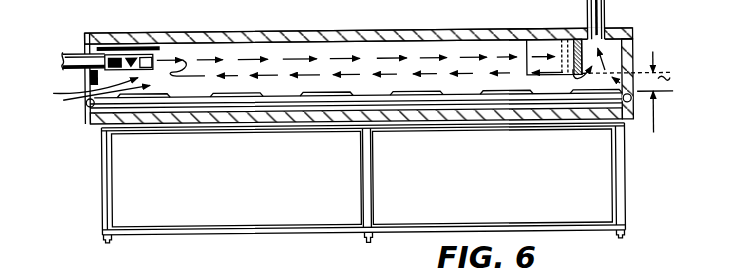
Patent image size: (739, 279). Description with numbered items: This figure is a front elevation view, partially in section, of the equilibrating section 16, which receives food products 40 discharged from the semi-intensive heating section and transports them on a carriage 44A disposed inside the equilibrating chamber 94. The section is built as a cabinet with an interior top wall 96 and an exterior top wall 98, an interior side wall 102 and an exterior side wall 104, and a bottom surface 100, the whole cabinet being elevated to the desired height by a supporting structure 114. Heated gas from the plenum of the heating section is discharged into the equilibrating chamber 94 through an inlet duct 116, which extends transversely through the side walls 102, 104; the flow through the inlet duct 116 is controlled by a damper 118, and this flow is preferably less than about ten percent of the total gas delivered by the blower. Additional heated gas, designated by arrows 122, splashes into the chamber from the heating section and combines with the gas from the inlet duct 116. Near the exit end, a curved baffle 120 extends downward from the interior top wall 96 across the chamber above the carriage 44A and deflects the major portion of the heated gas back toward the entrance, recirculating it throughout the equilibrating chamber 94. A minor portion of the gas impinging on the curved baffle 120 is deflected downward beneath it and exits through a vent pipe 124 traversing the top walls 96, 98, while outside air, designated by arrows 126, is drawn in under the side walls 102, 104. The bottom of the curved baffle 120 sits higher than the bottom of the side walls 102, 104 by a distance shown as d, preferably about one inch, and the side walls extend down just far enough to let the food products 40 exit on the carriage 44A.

The equilibrating section 16 is at (55, 49).
The food products 40 is at (325, 92).
The carriage 44A is at (87, 123).
The equilibrating chamber 94 is at (282, 52).
The interior top wall 96 is at (437, 42).
The exterior top wall 98 is at (360, 32).
The bottom surface 100 is at (511, 113).
The interior side wall 102 is at (633, 33).
The exterior side wall 104 is at (636, 60).
The supporting structure 114 is at (369, 197).
The inlet duct 116 is at (75, 55).
The damper 118 is at (133, 57).
The curved baffle 120 is at (540, 44).
The arrows (heated gas entering from heating section) 122 is at (76, 93).
The vent pipe 124 is at (606, 17).
The arrows (outside air) 126 is at (637, 93).